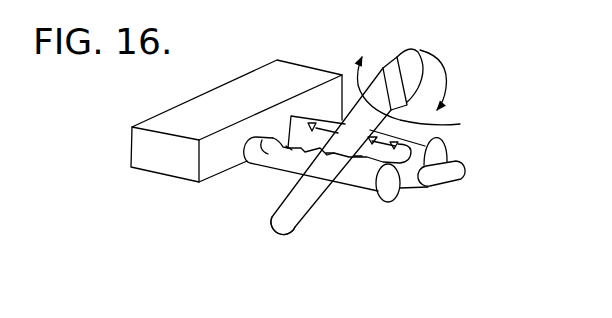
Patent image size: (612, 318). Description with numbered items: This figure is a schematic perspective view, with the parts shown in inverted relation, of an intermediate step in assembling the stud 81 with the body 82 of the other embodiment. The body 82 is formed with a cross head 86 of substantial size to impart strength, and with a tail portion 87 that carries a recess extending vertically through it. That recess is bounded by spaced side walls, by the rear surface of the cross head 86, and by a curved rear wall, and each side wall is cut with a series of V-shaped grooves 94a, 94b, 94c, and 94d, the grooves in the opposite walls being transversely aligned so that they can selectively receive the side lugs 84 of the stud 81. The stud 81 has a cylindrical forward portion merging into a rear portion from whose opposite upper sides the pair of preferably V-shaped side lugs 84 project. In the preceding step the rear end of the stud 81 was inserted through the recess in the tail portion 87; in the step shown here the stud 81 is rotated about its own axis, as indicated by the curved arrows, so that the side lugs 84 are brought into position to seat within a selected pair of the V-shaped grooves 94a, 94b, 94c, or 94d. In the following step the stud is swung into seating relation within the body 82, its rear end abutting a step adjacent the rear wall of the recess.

The stud 81 is at (290, 238).
The body 82 is at (322, 57).
The side lugs 84 is at (385, 64).
The cross head 86 is at (233, 85).
The tail portion 87 is at (466, 166).
The V-shaped groove 94a is at (276, 148).
The V-shaped groove 94b is at (292, 153).
The V-shaped groove 94c is at (330, 158).
The V-shaped groove 94d is at (358, 153).